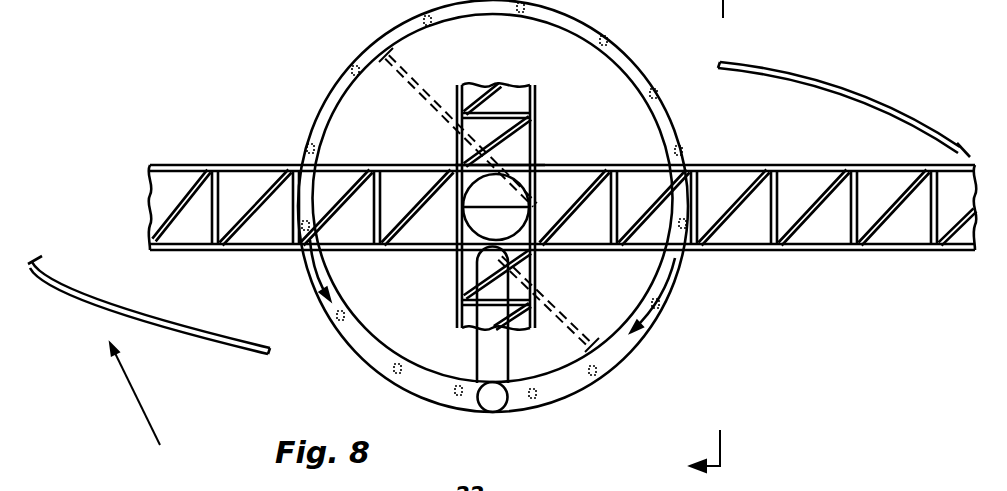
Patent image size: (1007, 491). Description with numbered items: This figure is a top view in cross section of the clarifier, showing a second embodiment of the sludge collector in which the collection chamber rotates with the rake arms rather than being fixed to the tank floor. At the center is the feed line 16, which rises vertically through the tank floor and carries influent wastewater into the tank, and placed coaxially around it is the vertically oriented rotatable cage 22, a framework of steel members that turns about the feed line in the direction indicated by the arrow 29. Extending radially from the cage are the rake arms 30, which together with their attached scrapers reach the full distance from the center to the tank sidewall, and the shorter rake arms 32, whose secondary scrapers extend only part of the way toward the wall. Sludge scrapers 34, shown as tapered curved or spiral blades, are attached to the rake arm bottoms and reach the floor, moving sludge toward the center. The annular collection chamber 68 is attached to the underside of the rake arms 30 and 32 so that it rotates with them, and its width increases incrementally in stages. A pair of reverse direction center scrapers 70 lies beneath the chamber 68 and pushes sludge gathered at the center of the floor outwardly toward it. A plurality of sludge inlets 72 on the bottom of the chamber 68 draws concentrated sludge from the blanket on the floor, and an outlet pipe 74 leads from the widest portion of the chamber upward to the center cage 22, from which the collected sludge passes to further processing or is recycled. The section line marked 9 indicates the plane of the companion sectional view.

The feed line 16 is at (517, 220).
The rotatable cage 22 is at (555, 169).
The arrow 29 is at (150, 394).
The rake arms 30 is at (540, 125).
The rake arms 32 is at (178, 166).
The sludge scrapers 34 is at (97, 300).
The annular collection chamber 68 is at (683, 266).
The reverse direction center scrapers 70 is at (403, 63).
The sludge inlets 72 is at (667, 308).
The outlet pipe 74 is at (500, 410).
The section line 9- 9 is at (696, 239).